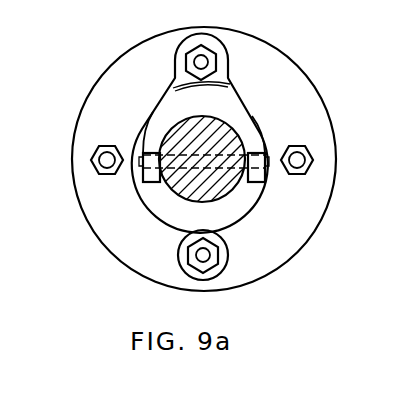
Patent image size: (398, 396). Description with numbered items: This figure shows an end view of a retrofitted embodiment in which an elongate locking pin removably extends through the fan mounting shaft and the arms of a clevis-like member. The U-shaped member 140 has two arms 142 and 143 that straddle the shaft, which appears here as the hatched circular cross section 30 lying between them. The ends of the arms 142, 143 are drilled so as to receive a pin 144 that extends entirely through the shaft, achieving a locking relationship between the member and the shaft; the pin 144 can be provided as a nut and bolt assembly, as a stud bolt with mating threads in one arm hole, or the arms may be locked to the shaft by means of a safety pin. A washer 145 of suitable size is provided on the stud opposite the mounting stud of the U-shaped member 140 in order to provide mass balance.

The U-shaped member 140 is at (232, 84).
The arm 142 is at (165, 121).
The pin 144 is at (139, 157).
The arm 143 is at (253, 143).
The bar 30 is at (222, 192).
The washer 145 is at (180, 256).